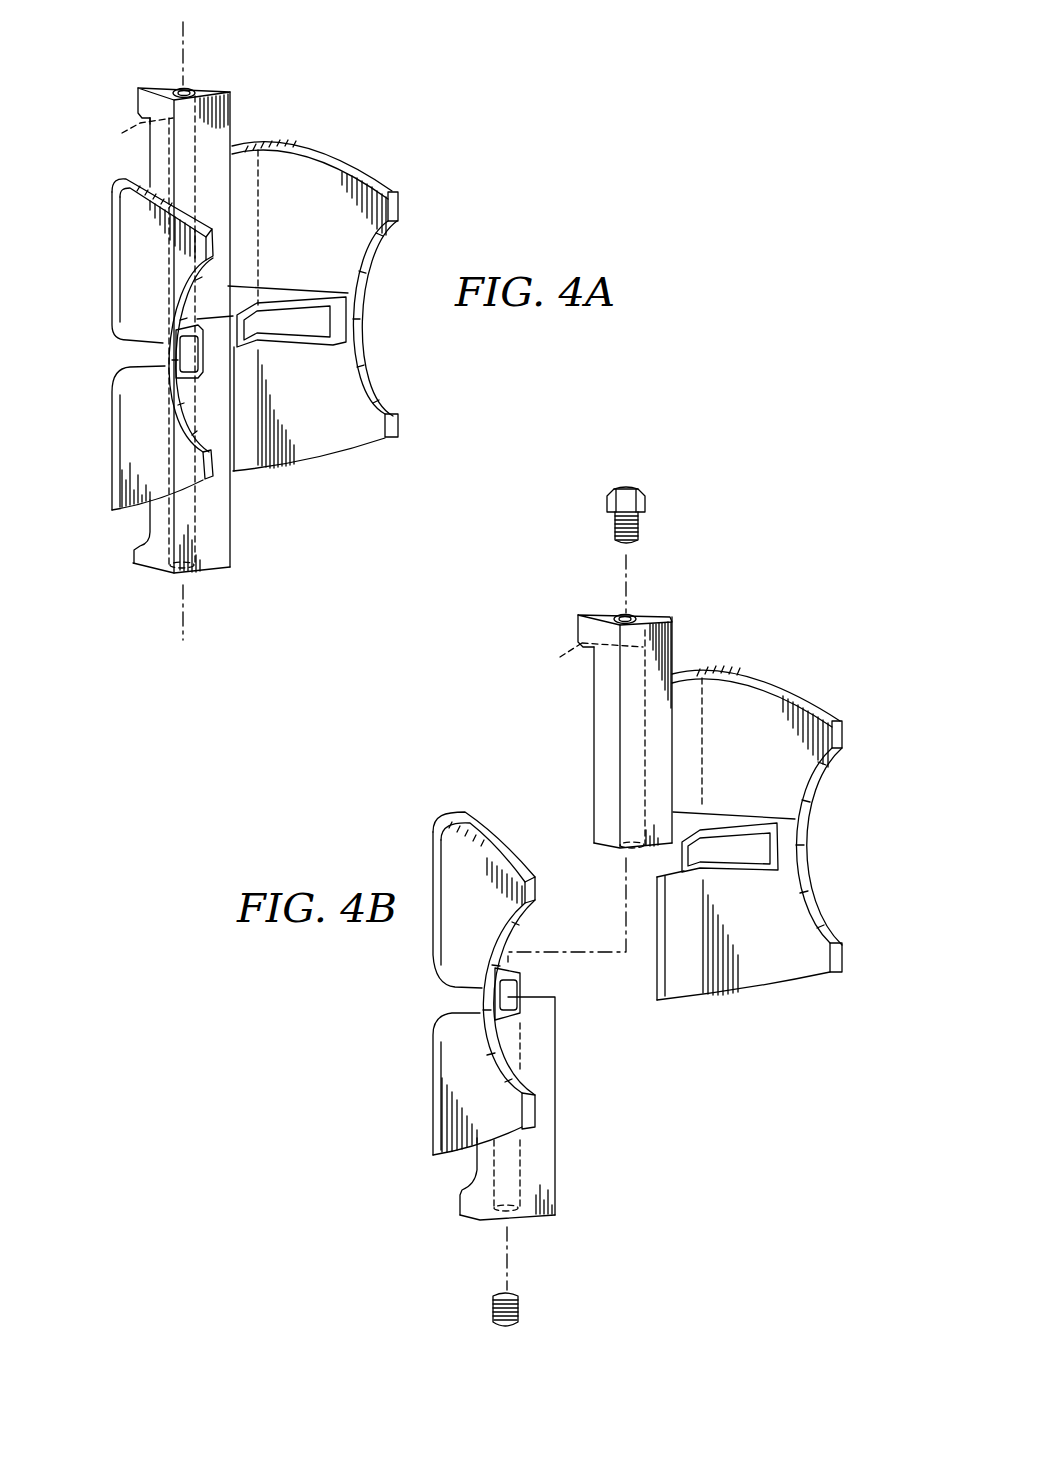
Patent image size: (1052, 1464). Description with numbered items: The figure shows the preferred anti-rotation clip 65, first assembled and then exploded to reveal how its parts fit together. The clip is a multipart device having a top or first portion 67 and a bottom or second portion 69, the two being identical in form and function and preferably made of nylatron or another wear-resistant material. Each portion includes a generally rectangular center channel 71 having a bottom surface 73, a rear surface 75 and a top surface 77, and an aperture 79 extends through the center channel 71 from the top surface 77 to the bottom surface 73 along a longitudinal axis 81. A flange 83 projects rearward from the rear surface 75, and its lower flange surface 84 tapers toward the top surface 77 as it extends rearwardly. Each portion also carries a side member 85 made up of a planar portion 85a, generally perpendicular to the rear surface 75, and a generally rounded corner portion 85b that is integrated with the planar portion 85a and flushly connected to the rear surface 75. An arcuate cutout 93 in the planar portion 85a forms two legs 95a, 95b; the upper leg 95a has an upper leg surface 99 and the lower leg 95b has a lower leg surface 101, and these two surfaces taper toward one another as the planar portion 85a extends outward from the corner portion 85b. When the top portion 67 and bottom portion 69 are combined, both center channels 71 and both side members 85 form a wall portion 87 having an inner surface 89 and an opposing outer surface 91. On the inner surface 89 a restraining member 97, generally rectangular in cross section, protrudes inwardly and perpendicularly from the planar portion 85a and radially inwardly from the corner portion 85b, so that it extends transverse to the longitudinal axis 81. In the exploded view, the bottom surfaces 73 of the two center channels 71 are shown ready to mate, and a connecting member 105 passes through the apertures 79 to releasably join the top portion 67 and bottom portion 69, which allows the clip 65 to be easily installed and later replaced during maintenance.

In FIG. 4A, the anti-rotation clip 65 is at (492, 152).
In FIG. 4B, the anti-rotation clip 65 is at (510, 708).
In FIG. 4A, the top portion 67 is at (338, 510).
In FIG. 4B, the top portion 67 is at (798, 1052).
In FIG. 4A, the bottom portion 69 is at (120, 550).
In FIG. 4B, the bottom portion 69 is at (577, 1085).
In FIG. 4A, the center channel 71 is at (231, 105).
In FIG. 4B, the center channel 71 is at (673, 630).
In FIG. 4B, the bottom surface 73 is at (620, 848).
In FIG. 4A, the rear surface 75 is at (118, 220).
In FIG. 4B, the rear surface 75 is at (600, 748).
In FIG. 4A, the top surface 77 is at (158, 87).
In FIG. 4B, the top surface 77 is at (602, 615).
In FIG. 4A, the aperture 79 is at (190, 88).
In FIG. 4B, the aperture 79 is at (633, 612).
In FIG. 4A, the longitudinal axis 81 is at (180, 30).
In FIG. 4B, the longitudinal axis 81 is at (575, 947).
In FIG. 4A, the flange 83 is at (137, 106).
In FIG. 4B, the flange 83 is at (579, 631).
In FIG. 4A, the lower flange surface 84 is at (133, 131).
In FIG. 4B, the lower flange surface 84 is at (586, 656).
In FIG. 4A, the side member 85 is at (358, 463).
In FIG. 4B, the side member 85 is at (800, 987).
In FIG. 4A, the planar portion 85a is at (212, 210).
In FIG. 4B, the planar portion 85a is at (833, 716).
In FIG. 4A, the corner portion 85b is at (114, 185).
In FIG. 4B, the corner portion 85b is at (686, 672).
In FIG. 4A, the wall portion 87 is at (97, 397).
In FIG. 4A, the inner surface 89 is at (315, 172).
In FIG. 4B, the inner surface 89 is at (761, 695).
In FIG. 4A, the outer surface 91 is at (122, 277).
In FIG. 4B, the outer surface 91 is at (445, 1060).
In FIG. 4A, the arcuate cutout 93 is at (369, 284).
In FIG. 4B, the arcuate cutout 93 is at (808, 810).
In FIG. 4A, the leg 95a is at (400, 205).
In FIG. 4B, the leg 95a is at (844, 734).
In FIG. 4A, the leg 95b is at (400, 435).
In FIG. 4B, the leg 95b is at (845, 960).
In FIG. 4A, the restraining member 97 is at (172, 345).
In FIG. 4B, the restraining member 97 is at (720, 812).
In FIG. 4A, the upper leg surface 99 is at (351, 172).
In FIG. 4B, the upper leg surface 99 is at (797, 700).
In FIG. 4A, the lower leg surface 101 is at (125, 510).
In FIG. 4B, the lower leg surface 101 is at (752, 998).
In FIG. 4B, the connecting member 105 is at (646, 499).